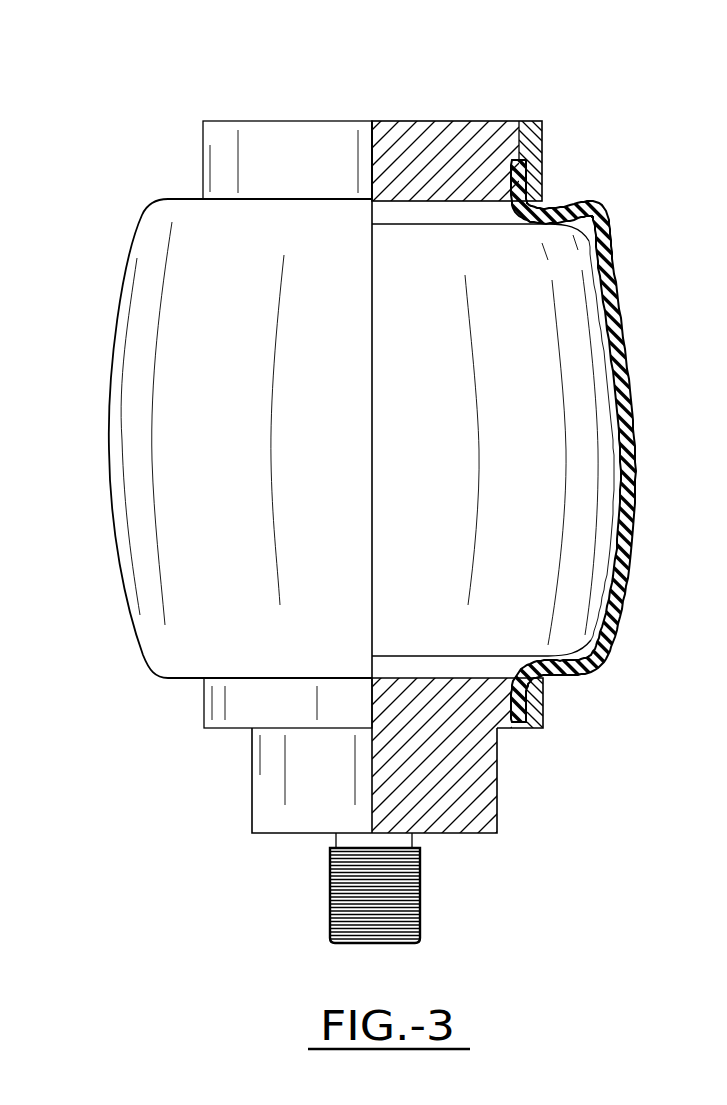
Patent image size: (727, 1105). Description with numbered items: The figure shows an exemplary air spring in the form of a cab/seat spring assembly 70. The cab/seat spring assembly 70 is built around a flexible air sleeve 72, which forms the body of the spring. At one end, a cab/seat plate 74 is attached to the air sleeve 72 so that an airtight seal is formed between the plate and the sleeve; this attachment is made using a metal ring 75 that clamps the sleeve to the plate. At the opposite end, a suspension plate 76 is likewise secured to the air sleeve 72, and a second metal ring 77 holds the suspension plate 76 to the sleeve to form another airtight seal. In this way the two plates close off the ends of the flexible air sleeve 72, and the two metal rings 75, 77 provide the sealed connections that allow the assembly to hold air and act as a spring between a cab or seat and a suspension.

The cab/seat spring assembly 70 is at (136, 116).
The flexible air sleeve 72 is at (140, 327).
The cab/seat plate 74 is at (401, 120).
The metal ring 75 is at (544, 145).
The suspension plate 76 is at (498, 800).
The metal ring 77 is at (546, 703).